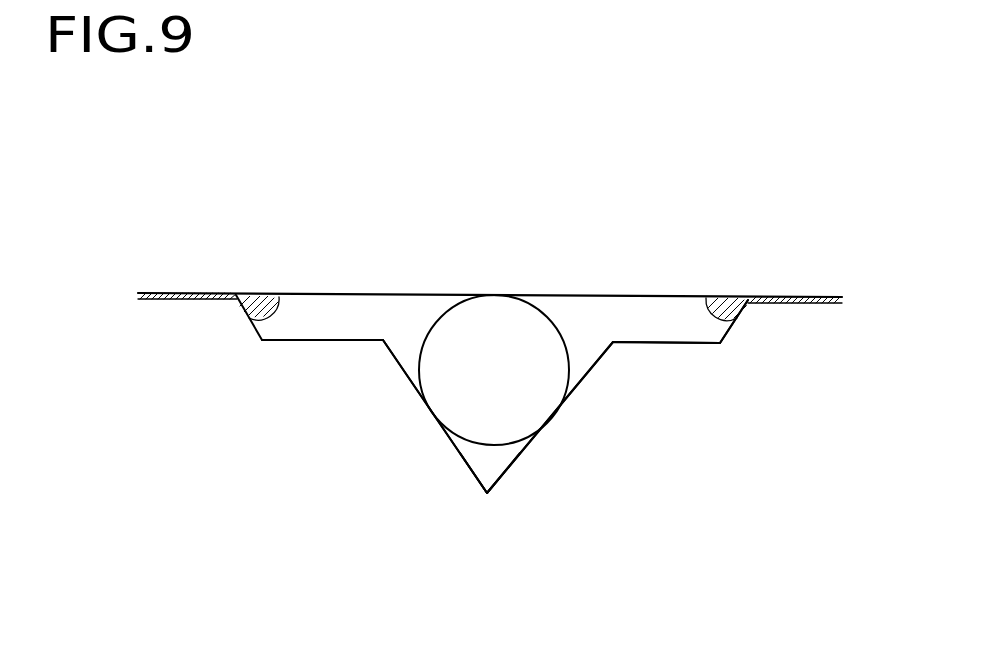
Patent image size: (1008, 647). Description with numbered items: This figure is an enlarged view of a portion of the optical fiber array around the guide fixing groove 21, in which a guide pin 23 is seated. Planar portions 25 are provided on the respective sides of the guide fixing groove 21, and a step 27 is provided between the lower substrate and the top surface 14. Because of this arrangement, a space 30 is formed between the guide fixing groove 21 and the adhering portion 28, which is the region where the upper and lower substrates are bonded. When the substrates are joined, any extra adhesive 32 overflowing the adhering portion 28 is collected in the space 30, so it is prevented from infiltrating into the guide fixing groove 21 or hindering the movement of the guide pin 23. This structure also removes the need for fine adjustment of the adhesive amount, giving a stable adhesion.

The top surface 14 is at (797, 304).
The guide fixing groove 21 is at (500, 453).
The guide pin 23 is at (492, 323).
The planar portions 25 is at (303, 342).
The step 27 is at (725, 340).
The adhering portion 28 is at (192, 293).
The space 30 is at (420, 338).
The extra adhesive 32 is at (278, 306).